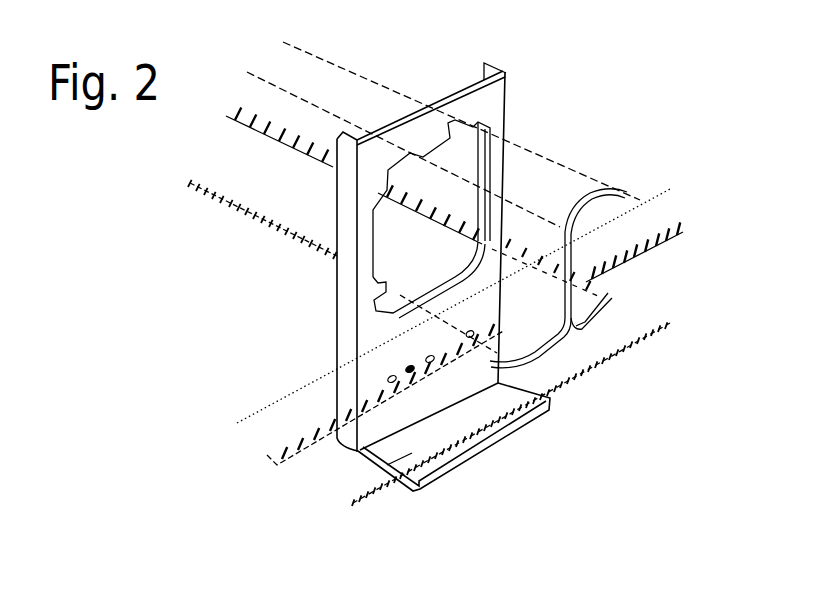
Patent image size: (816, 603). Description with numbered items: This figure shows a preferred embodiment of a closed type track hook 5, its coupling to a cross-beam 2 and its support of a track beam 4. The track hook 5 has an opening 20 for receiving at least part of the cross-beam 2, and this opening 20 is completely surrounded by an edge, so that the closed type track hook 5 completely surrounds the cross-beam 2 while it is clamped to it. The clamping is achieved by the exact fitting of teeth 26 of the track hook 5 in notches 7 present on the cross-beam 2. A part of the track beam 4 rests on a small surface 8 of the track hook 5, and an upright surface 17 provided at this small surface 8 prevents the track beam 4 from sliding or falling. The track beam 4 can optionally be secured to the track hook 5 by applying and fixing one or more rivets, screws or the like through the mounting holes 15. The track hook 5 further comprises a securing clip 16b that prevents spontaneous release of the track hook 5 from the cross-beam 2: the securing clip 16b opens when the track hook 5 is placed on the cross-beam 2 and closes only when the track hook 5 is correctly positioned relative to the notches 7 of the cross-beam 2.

The cross-beam 2 is at (546, 185).
The track beam 4 is at (281, 416).
The closed type track hook 5 is at (517, 108).
The notches 7 is at (246, 132).
The small surface 8 is at (378, 468).
The mounting holes 15 is at (405, 365).
The securing clip 16b is at (470, 95).
The upright surface 17 is at (513, 430).
The opening 20 is at (391, 230).
The teeth 26 is at (503, 140).